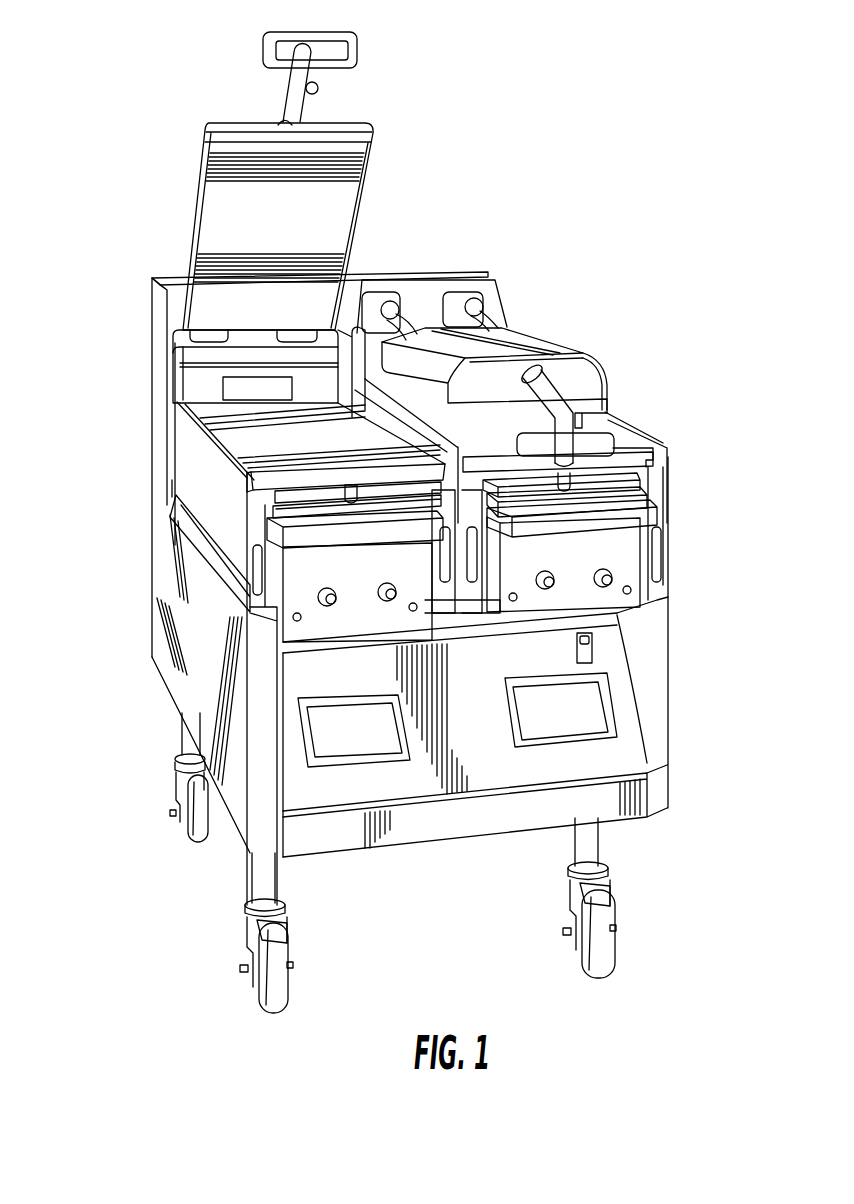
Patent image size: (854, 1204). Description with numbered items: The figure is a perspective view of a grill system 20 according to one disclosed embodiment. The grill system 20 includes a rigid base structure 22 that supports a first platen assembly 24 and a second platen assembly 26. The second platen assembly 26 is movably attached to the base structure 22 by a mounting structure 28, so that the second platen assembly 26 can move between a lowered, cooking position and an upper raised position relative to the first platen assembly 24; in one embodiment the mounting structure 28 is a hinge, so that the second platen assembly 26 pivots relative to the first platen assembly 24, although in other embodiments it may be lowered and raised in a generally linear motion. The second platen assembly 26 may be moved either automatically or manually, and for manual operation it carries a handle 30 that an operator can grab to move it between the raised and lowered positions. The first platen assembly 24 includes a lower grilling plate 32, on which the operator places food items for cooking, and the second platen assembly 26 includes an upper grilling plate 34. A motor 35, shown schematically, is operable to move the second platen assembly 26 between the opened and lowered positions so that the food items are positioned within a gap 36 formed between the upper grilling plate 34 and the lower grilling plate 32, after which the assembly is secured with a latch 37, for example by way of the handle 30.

The grill system 20 is at (714, 221).
The rigid base structure 22 is at (660, 773).
The first platen assembly 24 is at (150, 545).
The second platen assembly 26 is at (150, 246).
The mounting structure 28 is at (220, 364).
The handle 30 is at (357, 46).
The lower grilling plate 32 is at (228, 461).
The upper grilling plate 34 is at (338, 230).
The motor 35 is at (288, 377).
The gap 36 is at (604, 427).
The latch 37 is at (319, 88).